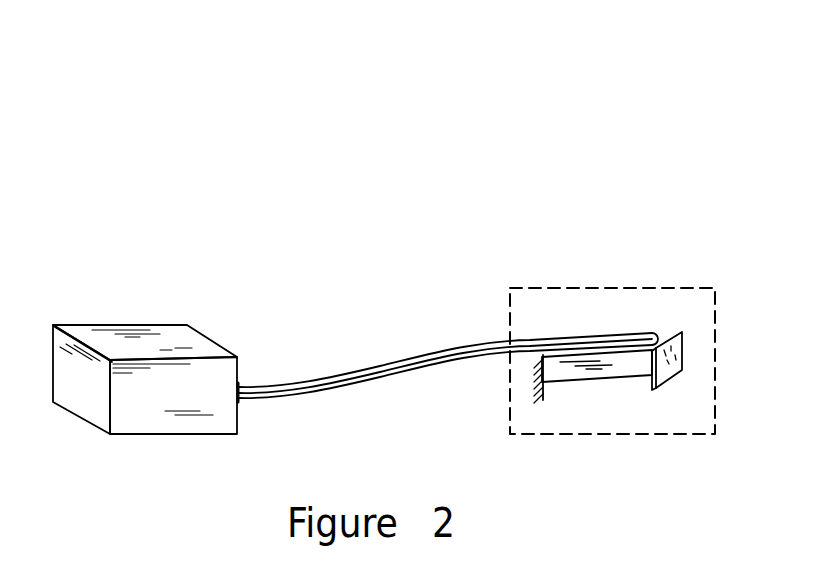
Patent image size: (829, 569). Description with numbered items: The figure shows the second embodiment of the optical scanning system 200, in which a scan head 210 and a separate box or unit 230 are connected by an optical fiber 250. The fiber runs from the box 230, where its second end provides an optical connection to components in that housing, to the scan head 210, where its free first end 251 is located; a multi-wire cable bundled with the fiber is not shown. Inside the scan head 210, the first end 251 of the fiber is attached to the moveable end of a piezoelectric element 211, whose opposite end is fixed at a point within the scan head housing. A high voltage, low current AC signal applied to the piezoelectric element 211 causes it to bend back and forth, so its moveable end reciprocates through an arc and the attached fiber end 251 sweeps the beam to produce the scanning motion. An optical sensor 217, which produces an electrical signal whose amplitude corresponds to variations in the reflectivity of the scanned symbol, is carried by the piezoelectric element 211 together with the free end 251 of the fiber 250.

The scanning system 200 is at (409, 239).
The scan head 210 is at (638, 325).
The piezoelectric element 211 is at (630, 365).
The sensor 217 is at (682, 357).
The separate box or unit 230 is at (145, 332).
The optical fiber 250 is at (418, 360).
The first end of the fiber 251 is at (646, 331).